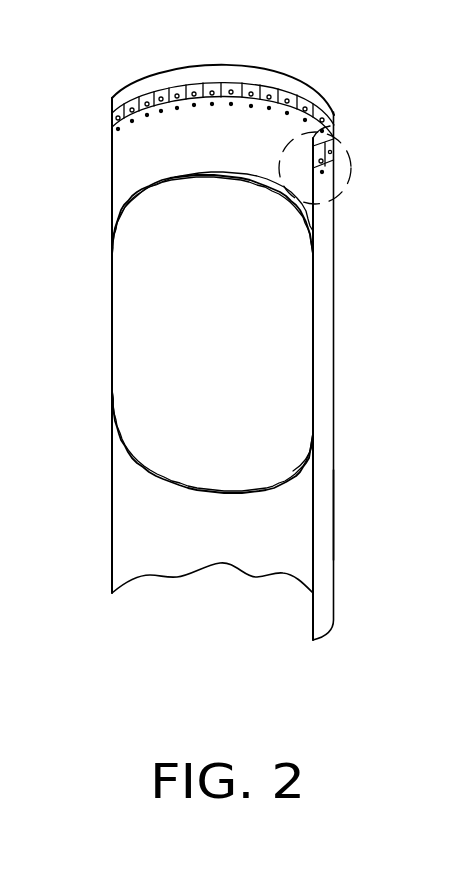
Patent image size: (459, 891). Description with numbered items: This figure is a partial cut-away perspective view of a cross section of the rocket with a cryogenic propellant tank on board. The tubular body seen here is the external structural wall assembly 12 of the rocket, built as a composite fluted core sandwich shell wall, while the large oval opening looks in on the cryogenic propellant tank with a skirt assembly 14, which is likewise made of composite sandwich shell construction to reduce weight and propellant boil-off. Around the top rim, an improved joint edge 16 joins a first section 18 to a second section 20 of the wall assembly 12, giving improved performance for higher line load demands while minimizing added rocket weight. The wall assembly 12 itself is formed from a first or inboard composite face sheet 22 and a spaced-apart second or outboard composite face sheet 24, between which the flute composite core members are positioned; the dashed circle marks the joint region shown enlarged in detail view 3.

The external structural wall assembly 12 is at (117, 86).
The cryogenic propellant tank with a skirt assembly 14 is at (147, 192).
The joint edge 16 is at (257, 80).
The first section 18 is at (315, 345).
The second section 20 is at (335, 108).
The first composite face sheet 22 is at (155, 508).
The second composite face sheet 24 is at (323, 508).
The detail view circle 3 is at (350, 149).